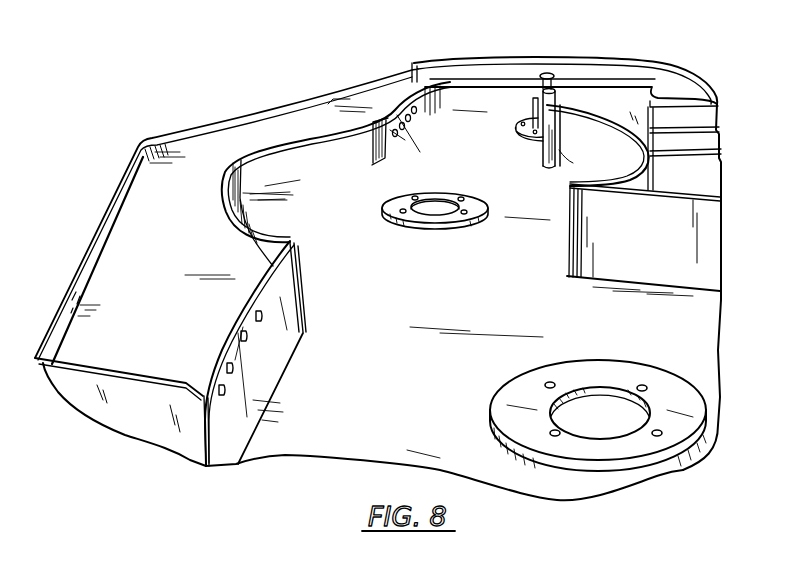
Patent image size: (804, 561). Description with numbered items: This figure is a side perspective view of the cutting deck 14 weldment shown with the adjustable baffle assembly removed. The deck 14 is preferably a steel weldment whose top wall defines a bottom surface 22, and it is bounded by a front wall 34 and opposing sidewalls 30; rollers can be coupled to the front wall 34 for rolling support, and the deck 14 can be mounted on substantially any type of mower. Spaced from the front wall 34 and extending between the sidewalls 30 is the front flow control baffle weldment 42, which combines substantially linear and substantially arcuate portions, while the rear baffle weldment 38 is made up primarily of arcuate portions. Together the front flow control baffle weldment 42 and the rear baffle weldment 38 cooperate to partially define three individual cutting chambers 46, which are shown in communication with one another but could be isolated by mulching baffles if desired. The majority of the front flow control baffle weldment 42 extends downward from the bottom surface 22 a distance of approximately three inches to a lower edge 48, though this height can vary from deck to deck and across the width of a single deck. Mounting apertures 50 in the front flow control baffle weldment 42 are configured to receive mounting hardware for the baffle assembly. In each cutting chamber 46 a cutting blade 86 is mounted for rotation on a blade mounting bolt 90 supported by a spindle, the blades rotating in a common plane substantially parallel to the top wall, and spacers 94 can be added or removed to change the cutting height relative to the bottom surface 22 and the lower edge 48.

The cutting deck 14 is at (385, 71).
The bottom surface 22 is at (437, 374).
The sidewalls 30 is at (510, 58).
The front wall 34 is at (222, 122).
The rear baffle weldment 38 is at (545, 168).
The front flow control baffle weldment 42 is at (246, 230).
The cutting chambers 46 is at (333, 182).
The lower edge 48 is at (271, 222).
The mounting apertures 50 is at (396, 136).
The cutting blade 86 is at (621, 80).
The blade mounting bolt 90 is at (553, 74).
The spacers 94 is at (530, 100).